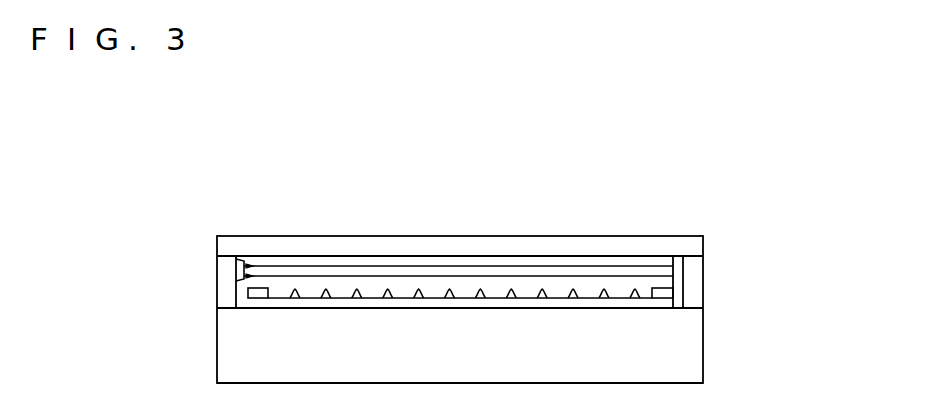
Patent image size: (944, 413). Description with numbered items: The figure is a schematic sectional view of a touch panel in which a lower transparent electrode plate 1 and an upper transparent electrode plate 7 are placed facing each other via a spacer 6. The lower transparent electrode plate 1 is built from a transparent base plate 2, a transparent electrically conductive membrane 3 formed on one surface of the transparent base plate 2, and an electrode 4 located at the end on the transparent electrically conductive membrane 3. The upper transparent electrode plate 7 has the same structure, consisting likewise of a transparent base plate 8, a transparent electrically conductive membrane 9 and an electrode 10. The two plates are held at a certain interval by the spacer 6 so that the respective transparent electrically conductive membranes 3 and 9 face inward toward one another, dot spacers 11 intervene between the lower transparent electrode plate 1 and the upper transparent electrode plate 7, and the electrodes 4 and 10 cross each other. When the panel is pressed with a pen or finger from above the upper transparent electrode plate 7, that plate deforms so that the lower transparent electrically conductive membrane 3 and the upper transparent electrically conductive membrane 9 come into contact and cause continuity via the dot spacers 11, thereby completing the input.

The lower transparent electrode plate 1 is at (812, 233).
The transparent base plate 2 is at (668, 335).
The transparent electrically conductive membrane 3 is at (661, 303).
The electrode 4 is at (665, 287).
The spacer 6 is at (695, 262).
The upper transparent electrode plate 7 is at (100, 165).
The transparent base plate 8 is at (259, 243).
The transparent electrically conductive membrane 9 is at (250, 266).
The electrode 10 is at (253, 274).
The dot spacers 11 is at (295, 290).